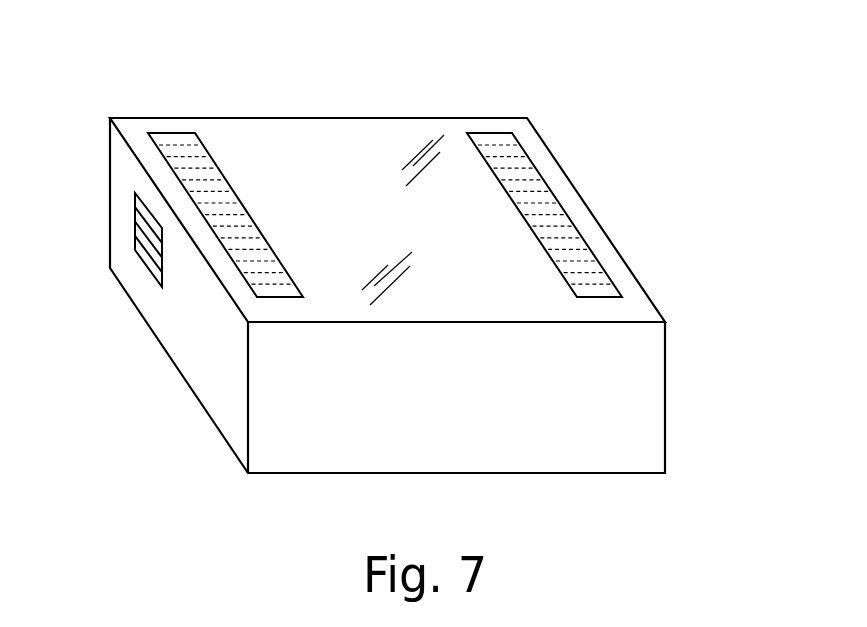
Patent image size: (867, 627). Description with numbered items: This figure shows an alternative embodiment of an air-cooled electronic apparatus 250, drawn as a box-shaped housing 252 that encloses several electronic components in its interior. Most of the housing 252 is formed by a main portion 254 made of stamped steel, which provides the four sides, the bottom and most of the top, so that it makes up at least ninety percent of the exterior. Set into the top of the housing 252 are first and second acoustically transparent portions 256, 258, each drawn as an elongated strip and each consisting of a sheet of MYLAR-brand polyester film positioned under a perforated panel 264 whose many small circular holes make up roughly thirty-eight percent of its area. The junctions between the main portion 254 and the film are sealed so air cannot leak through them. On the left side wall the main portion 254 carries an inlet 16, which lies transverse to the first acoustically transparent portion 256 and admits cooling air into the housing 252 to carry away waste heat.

The air-cooled electronic apparatus 250 is at (644, 96).
The housing 252 is at (688, 398).
The main portion 254 is at (563, 480).
The inlet 16 is at (126, 232).
The first acoustically transparent portion 256 is at (248, 215).
The second acoustically transparent portion 258 is at (527, 226).
The perforated panel 264 is at (279, 286).